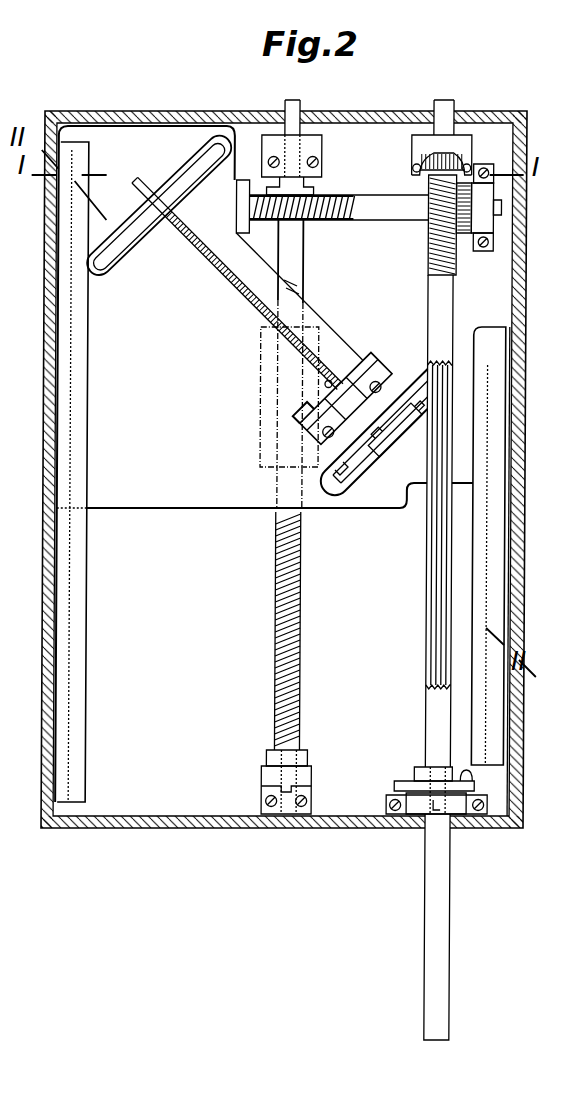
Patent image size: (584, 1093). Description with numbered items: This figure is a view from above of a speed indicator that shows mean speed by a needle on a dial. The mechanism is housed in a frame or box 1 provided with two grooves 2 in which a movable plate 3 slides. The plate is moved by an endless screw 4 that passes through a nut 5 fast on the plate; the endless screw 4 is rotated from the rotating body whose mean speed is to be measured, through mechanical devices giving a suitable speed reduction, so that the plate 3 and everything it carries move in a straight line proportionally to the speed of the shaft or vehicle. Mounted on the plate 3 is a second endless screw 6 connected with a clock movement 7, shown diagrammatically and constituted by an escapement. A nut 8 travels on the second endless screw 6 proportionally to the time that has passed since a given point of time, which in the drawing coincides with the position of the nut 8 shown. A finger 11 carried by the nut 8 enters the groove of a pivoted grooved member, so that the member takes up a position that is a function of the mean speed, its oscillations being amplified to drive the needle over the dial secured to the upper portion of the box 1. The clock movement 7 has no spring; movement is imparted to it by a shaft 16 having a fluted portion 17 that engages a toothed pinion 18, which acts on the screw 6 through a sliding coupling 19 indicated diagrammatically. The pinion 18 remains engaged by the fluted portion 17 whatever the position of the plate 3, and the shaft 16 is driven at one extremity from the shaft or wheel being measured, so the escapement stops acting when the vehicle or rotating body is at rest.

The frame or box 1 is at (78, 822).
The grooves 2 is at (80, 340).
The movable plate 3 is at (152, 492).
The endless screw 4 is at (275, 586).
The nut 5 is at (268, 454).
The second endless screw 6 is at (237, 282).
The clock movement 7 is at (122, 246).
The nut 8 is at (364, 367).
The finger 11 is at (332, 380).
The shaft 16 is at (446, 277).
The fluted portion 17 is at (442, 541).
The toothed pinion 18 is at (362, 456).
The sliding coupling 19 is at (400, 452).